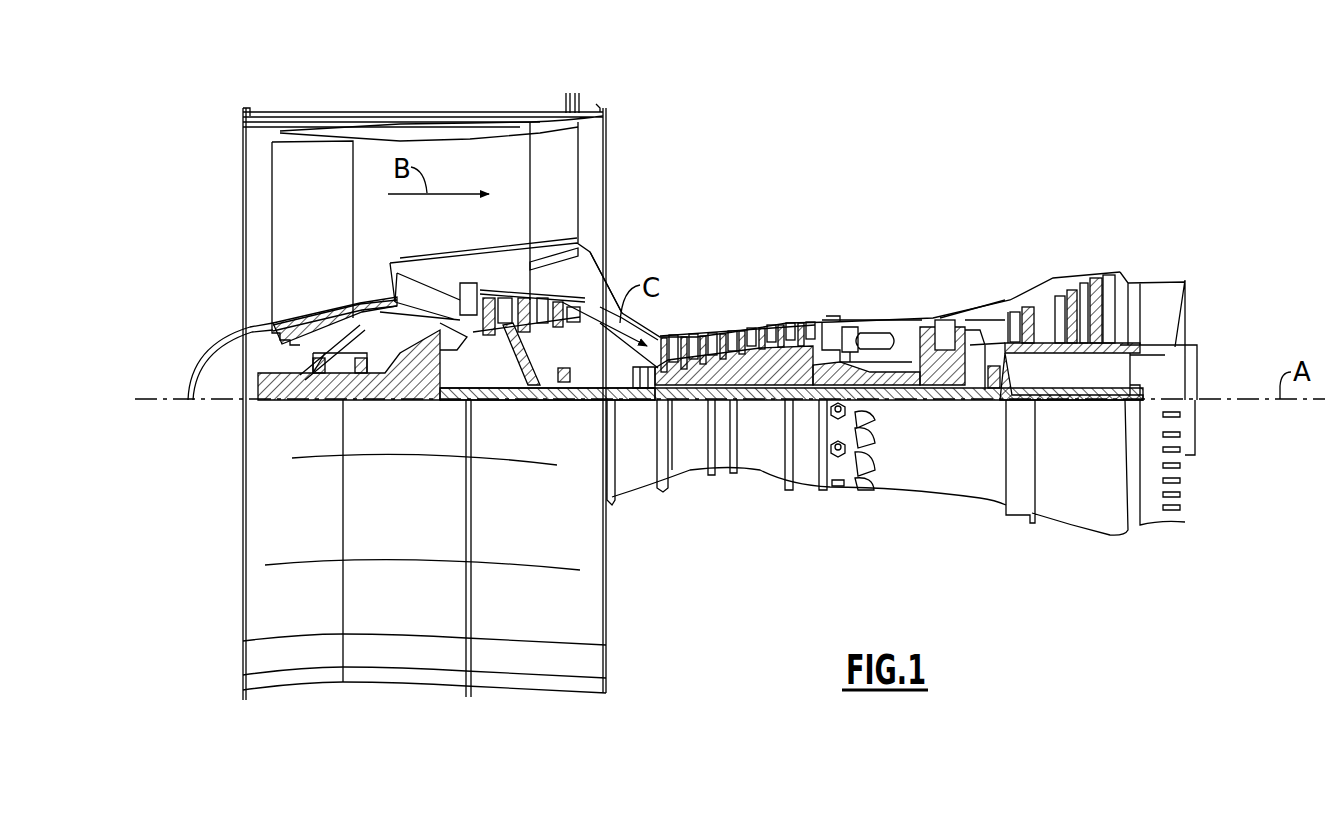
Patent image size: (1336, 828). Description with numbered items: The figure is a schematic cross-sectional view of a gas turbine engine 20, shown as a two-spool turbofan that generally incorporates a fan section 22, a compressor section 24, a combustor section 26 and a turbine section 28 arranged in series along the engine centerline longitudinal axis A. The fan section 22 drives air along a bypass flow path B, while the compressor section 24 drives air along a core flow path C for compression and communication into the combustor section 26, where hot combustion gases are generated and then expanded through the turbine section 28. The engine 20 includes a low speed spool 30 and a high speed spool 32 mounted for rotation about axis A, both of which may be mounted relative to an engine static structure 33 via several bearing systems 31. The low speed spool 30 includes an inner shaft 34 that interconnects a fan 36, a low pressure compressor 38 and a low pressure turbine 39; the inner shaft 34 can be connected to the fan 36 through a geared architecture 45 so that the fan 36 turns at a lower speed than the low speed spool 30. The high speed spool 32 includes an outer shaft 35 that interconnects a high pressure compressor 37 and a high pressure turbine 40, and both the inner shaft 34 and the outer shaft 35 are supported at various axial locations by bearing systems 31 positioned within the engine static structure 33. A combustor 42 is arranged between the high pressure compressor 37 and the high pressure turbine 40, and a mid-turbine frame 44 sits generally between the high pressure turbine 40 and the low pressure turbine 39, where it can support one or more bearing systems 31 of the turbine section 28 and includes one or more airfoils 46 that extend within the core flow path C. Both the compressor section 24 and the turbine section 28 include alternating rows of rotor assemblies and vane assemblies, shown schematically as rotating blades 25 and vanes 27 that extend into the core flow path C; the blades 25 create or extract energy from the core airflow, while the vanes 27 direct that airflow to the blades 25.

The gas turbine engine 20 is at (882, 168).
The fan section 22 is at (352, 110).
The compressor section 24 is at (655, 307).
The blades 25 is at (505, 308).
The combustor section 26 is at (878, 298).
The vanes 27 is at (542, 302).
The turbine section 28 is at (1025, 258).
The low speed spool 30 is at (764, 404).
The bearing systems 31 is at (330, 370).
The high speed spool 32 is at (803, 367).
The engine static structure 33 is at (805, 492).
The inner shaft 34 is at (630, 400).
The outer shaft 35 is at (893, 392).
The fan 36 is at (328, 249).
The high pressure compressor 37 is at (737, 367).
The low pressure compressor 38 is at (578, 256).
The low pressure turbine 39 is at (1056, 305).
The high pressure turbine 40 is at (940, 318).
The combustor 42 is at (878, 343).
The mid-turbine frame 44 is at (989, 306).
The geared architecture 45 is at (425, 378).
The airfoils 46 is at (1010, 356).